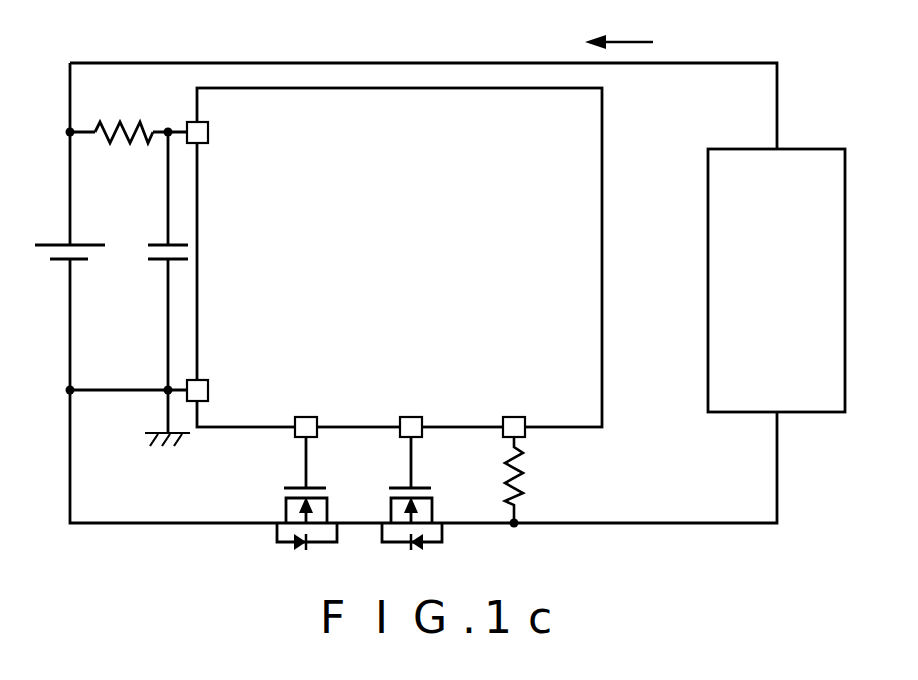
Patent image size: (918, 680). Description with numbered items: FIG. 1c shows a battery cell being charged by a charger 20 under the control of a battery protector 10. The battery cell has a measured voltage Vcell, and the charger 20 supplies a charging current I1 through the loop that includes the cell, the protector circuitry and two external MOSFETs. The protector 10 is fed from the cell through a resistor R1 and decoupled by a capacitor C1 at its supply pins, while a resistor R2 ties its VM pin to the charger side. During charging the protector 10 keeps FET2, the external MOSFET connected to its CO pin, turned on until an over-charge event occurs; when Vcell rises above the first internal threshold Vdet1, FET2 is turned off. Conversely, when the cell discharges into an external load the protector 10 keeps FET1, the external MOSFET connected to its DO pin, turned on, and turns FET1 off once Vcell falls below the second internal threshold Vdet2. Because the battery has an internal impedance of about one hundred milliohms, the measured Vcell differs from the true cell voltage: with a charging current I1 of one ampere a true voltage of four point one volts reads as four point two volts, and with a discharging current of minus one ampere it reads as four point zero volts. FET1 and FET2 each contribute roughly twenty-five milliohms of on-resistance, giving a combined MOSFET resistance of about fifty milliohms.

The battery protector 10 is at (602, 130).
The charger 20 is at (825, 147).
The resistor R1 is at (124, 107).
The capacitor C1 is at (146, 282).
The resistor R2 is at (536, 480).
The FET 1 FET1 is at (285, 493).
The FET 2 FET2 is at (391, 493).
The battery cell voltage Vcell is at (56, 235).
The charging current I1 is at (619, 31).